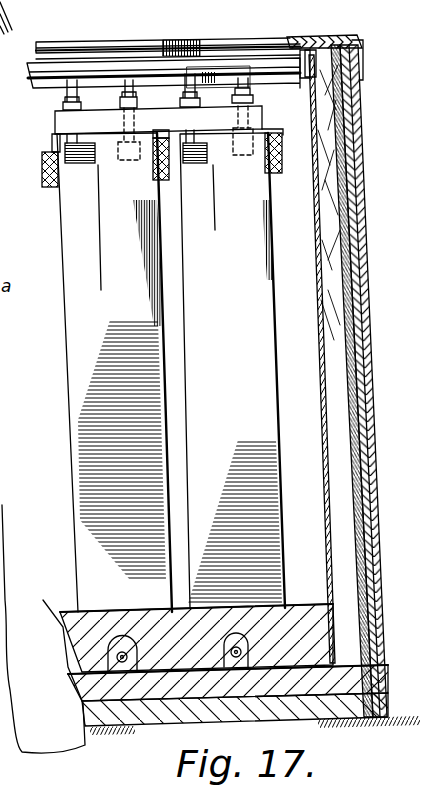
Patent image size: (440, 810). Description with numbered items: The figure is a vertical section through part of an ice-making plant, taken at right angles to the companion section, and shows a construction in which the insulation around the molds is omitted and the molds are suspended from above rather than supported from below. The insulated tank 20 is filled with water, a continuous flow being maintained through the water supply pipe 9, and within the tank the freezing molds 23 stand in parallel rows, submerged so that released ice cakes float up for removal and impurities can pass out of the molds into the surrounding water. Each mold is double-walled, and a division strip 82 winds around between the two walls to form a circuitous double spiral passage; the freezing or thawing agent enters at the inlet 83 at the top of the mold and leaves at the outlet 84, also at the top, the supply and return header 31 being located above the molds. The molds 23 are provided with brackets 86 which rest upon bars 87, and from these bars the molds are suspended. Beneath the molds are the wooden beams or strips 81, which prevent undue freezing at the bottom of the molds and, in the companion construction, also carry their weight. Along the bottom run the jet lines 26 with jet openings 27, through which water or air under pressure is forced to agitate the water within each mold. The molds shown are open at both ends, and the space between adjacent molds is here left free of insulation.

The water supply pipe 9 is at (161, 82).
The return header 31 is at (38, 80).
The outlet 84 is at (70, 140).
The inlet 83 is at (126, 133).
The brackets 86 is at (52, 148).
The bars 87 is at (44, 186).
The freezing molds 23 is at (171, 372).
The division strip 82 is at (3, 320).
The insulated tank 20 is at (362, 477).
The wooden beams or strips 81 is at (305, 601).
The jet lines 26 is at (20, 642).
The jet openings 27 is at (137, 650).